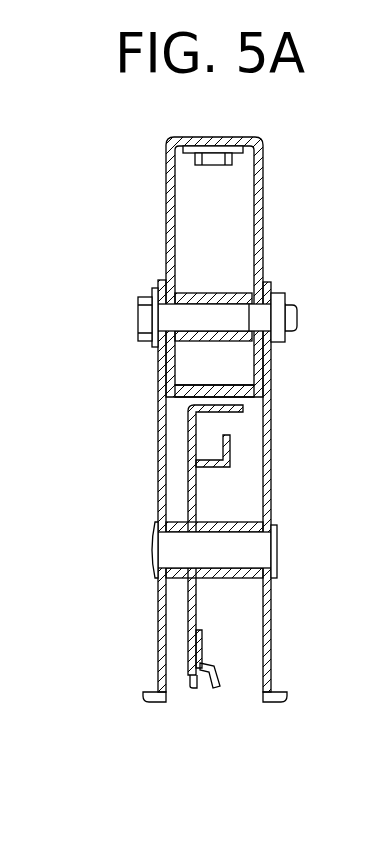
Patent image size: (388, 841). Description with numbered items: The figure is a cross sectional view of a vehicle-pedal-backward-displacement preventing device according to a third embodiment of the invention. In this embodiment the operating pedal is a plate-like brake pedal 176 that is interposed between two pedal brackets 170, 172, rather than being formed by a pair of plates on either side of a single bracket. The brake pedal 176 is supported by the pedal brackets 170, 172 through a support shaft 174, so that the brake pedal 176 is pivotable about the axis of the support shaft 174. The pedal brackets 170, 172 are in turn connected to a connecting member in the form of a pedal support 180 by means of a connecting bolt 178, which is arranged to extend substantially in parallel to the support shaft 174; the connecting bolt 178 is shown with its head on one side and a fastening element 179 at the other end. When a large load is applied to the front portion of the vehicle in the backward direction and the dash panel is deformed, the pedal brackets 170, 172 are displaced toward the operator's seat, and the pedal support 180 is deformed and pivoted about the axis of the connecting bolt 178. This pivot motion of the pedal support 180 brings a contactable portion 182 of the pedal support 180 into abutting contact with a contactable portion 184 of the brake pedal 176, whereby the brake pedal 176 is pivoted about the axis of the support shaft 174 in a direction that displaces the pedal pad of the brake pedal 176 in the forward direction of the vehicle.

The pedal bracket 170 is at (162, 407).
The pedal bracket 172 is at (263, 485).
The support shaft 174 is at (172, 547).
The brake pedal 176 is at (195, 707).
The connecting bolt 178 is at (145, 320).
The upper bolt 179 is at (277, 294).
The pedal support 180 is at (263, 213).
The contactable portion 182 is at (213, 387).
The contactable portion 184 is at (222, 413).